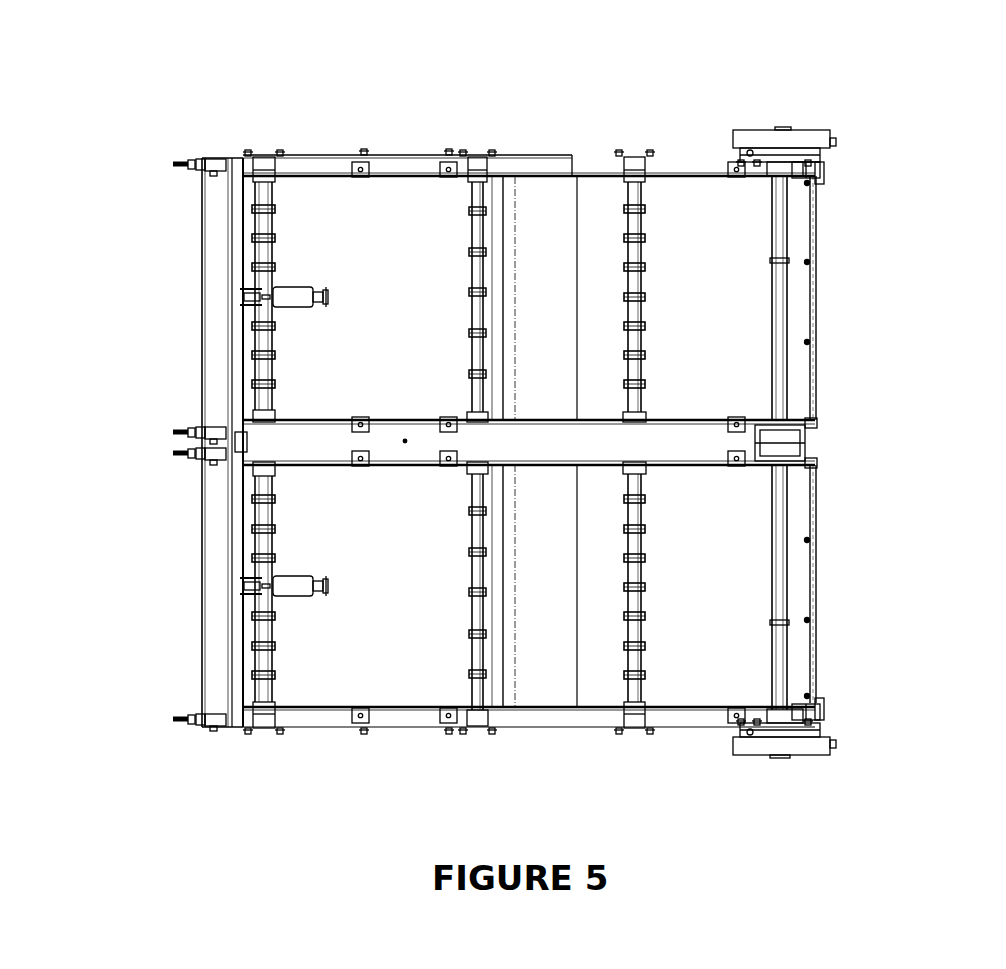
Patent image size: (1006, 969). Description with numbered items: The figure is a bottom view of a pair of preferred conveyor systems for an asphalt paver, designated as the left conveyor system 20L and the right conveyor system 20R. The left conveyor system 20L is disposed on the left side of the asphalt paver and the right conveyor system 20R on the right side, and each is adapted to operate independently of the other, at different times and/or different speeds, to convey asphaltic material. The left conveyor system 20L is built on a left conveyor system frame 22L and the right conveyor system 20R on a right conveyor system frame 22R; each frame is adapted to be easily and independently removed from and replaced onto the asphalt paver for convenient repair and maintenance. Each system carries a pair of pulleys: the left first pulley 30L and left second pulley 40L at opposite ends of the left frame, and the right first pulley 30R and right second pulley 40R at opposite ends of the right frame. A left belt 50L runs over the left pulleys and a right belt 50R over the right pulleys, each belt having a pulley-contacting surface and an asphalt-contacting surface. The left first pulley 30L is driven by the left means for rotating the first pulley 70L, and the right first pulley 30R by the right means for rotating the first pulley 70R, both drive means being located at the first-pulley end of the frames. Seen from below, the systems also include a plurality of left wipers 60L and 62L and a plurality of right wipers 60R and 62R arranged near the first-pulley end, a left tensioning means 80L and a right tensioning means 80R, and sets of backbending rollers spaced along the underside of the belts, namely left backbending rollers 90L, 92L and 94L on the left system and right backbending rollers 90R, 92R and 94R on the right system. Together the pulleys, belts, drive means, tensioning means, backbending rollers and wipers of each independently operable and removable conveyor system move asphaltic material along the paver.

The left conveyor system 20L is at (192, 269).
The right conveyor system 20R is at (190, 572).
The left conveyor system frame 22L is at (697, 175).
The right conveyor system frame 22R is at (697, 715).
The left first pulley 30L is at (818, 165).
The right first pulley 30R is at (820, 714).
The left second pulley 40L is at (211, 155).
The right second pulley 40R is at (210, 732).
The left belt 50L is at (408, 192).
The right belt 50R is at (375, 665).
The left wiper 60L is at (818, 300).
The right wiper 60R is at (818, 560).
The left wiper 62L is at (790, 398).
The right wiper 62R is at (818, 648).
The left means for rotating the first pulley 70L is at (810, 125).
The right means for rotating the first pulley 70R is at (805, 760).
The left tensioning means 80L is at (295, 312).
The right tensioning means 80R is at (295, 605).
The left backbending roller 90L is at (278, 185).
The right backbending roller 90R is at (270, 662).
The left backbending roller 92L is at (482, 195).
The right backbending roller 92R is at (473, 653).
The left backbending roller 94L is at (625, 192).
The right backbending roller 94R is at (620, 660).